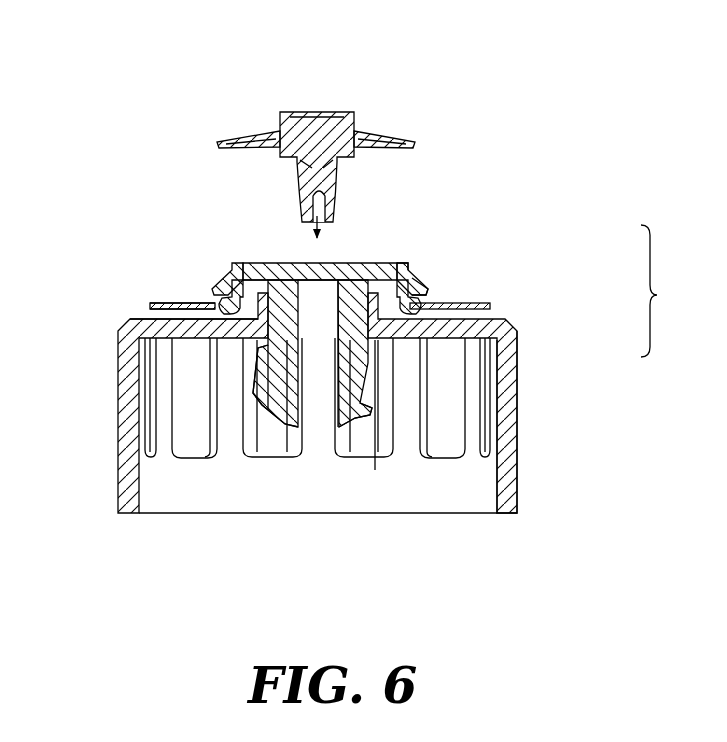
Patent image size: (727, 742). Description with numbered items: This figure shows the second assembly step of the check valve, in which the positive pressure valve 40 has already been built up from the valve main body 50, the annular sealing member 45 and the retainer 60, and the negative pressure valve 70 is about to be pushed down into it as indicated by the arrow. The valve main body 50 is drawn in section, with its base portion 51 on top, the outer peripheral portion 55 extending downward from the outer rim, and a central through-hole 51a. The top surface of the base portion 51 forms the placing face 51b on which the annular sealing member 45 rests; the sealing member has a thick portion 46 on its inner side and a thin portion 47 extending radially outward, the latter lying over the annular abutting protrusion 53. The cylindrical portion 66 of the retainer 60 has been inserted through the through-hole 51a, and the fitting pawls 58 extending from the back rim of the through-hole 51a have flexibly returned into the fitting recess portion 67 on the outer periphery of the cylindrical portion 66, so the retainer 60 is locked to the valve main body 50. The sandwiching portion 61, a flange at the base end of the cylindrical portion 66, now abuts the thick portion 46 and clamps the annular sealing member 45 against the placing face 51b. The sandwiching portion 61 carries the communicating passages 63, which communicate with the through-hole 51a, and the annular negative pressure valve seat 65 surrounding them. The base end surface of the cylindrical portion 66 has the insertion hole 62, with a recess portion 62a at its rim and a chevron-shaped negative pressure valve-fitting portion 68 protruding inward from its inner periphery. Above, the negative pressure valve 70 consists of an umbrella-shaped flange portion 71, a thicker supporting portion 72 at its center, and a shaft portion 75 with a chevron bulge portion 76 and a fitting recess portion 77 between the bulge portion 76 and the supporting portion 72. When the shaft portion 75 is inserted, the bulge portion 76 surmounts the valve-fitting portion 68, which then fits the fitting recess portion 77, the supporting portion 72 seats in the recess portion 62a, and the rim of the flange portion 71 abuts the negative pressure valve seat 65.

The positive pressure valve 40 is at (661, 291).
The annular sealing member 45 is at (494, 304).
The thick portion 46 is at (232, 300).
The thin portion 47 is at (160, 311).
The valve main body 50 is at (347, 423).
The base portion 51 is at (135, 329).
The through-hole 51a is at (374, 362).
The placing face 51b is at (158, 318).
The abutting protrusion 53 is at (213, 301).
The outer peripheral portion 55 is at (512, 489).
The fitting pawls 58 is at (258, 402).
The retainer 60 is at (426, 382).
The sandwiching portion 61 is at (418, 287).
The insertion hole 62 is at (306, 282).
The recess portion 62a is at (285, 276).
The communicating passages 63 is at (379, 279).
The negative pressure valve seat 65 is at (401, 264).
The cylindrical portion 66 is at (352, 412).
The fitting recess portion 67 is at (285, 422).
The negative pressure valve-fitting portion 68 is at (340, 292).
The negative pressure valve 70 is at (321, 128).
The flange portion 71 is at (390, 140).
The supporting portion 72 is at (288, 112).
The shaft portion 75 is at (310, 168).
The bulge portion 76 is at (305, 190).
The fitting recess portion 77 is at (333, 168).